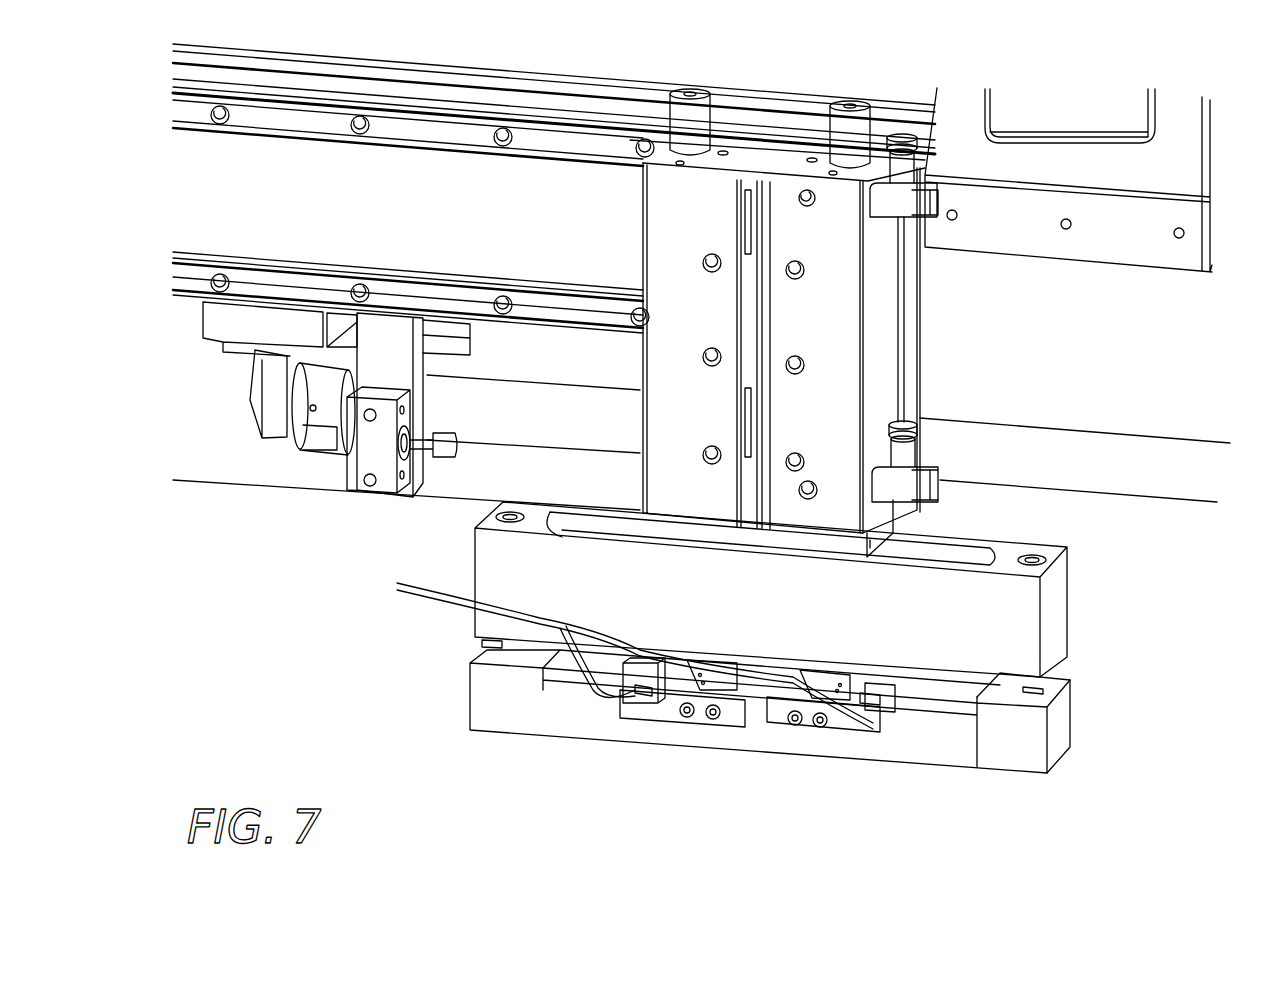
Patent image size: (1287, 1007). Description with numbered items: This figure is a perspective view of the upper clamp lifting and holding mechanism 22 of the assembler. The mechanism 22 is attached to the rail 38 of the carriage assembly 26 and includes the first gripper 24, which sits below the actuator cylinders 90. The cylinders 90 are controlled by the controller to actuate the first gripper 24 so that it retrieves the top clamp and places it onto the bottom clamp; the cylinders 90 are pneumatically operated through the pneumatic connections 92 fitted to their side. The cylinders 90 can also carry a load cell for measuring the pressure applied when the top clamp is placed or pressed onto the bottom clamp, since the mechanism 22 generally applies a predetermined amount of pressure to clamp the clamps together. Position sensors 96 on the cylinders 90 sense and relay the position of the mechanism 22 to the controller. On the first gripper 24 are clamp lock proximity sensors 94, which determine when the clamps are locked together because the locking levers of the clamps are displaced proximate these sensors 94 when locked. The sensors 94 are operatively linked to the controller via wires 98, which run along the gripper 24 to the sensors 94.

The holding mechanism 22 is at (596, 208).
The first gripper 24 is at (543, 720).
The carriage assembly 26 is at (1075, 295).
The rail 38 is at (554, 277).
The actuator cylinders 90 is at (843, 295).
The pneumatic connections 92 is at (885, 193).
The clamp lock proximity sensors 94 is at (653, 690).
The position sensors 96 is at (768, 230).
The wires 98 is at (437, 593).